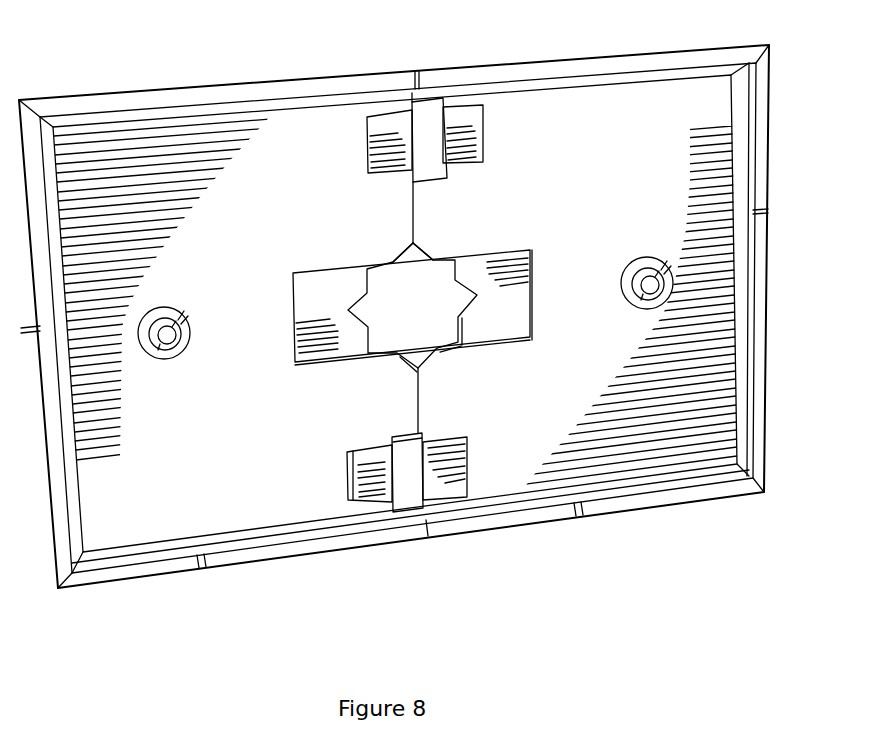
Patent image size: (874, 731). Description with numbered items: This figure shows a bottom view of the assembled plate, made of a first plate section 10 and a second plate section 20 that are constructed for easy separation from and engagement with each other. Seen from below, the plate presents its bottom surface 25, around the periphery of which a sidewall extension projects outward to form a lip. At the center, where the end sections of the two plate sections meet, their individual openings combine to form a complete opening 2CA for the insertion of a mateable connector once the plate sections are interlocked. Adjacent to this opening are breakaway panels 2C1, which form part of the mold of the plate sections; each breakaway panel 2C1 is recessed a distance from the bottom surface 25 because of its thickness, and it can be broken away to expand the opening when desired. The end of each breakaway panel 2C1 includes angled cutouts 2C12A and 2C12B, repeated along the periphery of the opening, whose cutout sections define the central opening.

The first plate section 10 is at (250, 570).
The second plate section 20 is at (538, 530).
The bottom surface 25 is at (612, 200).
The breakaway panel 2C1 is at (325, 311).
The complete opening 2CA is at (407, 316).
The angled cutout 2C12B is at (401, 247).
The angled cutout 2C12A is at (431, 245).